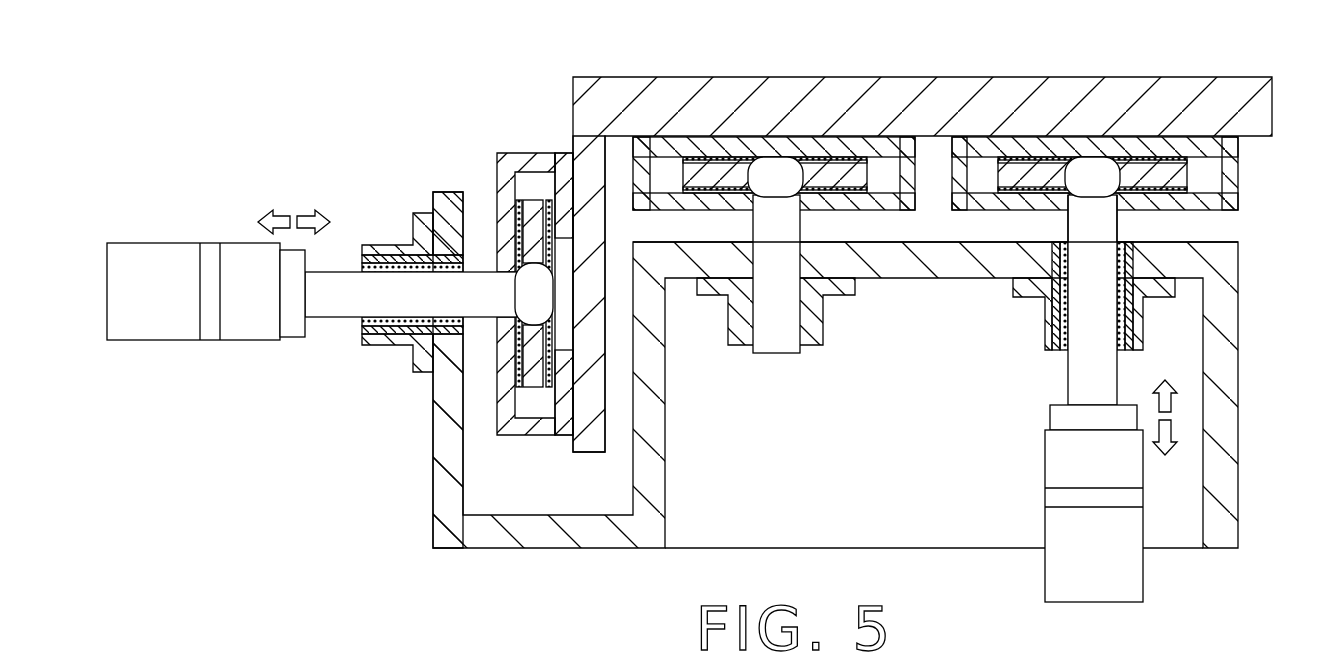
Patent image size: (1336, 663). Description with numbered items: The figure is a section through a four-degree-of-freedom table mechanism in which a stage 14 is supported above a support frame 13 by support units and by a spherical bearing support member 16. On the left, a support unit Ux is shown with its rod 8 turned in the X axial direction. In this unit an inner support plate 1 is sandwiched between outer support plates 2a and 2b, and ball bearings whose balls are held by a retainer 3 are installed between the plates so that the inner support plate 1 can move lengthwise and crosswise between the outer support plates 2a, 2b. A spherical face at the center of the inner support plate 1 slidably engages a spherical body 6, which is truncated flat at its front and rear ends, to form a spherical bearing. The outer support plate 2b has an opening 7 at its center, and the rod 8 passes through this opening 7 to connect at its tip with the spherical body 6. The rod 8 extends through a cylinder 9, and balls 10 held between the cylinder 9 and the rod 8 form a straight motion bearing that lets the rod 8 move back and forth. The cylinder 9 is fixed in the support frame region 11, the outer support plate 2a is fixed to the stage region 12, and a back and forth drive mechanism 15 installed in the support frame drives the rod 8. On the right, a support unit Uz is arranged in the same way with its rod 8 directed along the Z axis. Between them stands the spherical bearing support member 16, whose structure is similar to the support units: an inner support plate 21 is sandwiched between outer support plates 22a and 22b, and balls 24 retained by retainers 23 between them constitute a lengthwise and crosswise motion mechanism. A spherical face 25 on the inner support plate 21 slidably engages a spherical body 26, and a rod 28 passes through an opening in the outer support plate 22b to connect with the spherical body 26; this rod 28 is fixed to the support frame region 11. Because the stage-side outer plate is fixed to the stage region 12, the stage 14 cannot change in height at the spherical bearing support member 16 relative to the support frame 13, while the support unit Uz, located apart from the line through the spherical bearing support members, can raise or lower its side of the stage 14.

The inner support plate 1 is at (535, 210).
The outer support plate 2a is at (565, 430).
The outer support plate 2b is at (505, 420).
The retainer 3 is at (519, 388).
The spherical body 6 is at (528, 297).
The opening 7 is at (1128, 205).
The rod 8 is at (348, 300).
The cylinder 9 is at (385, 245).
The balls 10 is at (400, 262).
The support frame region 11 is at (812, 312).
The stage region 12 is at (583, 176).
The support frame 13 is at (672, 280).
The stage 14 is at (985, 80).
The back and forth drive mechanism 15 is at (248, 327).
The spherical bearing support member 16 is at (835, 240).
The inner support plate 21 is at (713, 150).
The outer support plate 22a is at (905, 150).
The outer support plate 22b is at (905, 208).
The retainer 23 is at (668, 160).
The balls 24 is at (855, 160).
The spherical face 25 is at (832, 160).
The spherical body 26 is at (775, 172).
The rod 28 is at (773, 328).
The support unit Ux is at (463, 355).
The support unit Uz is at (1165, 228).